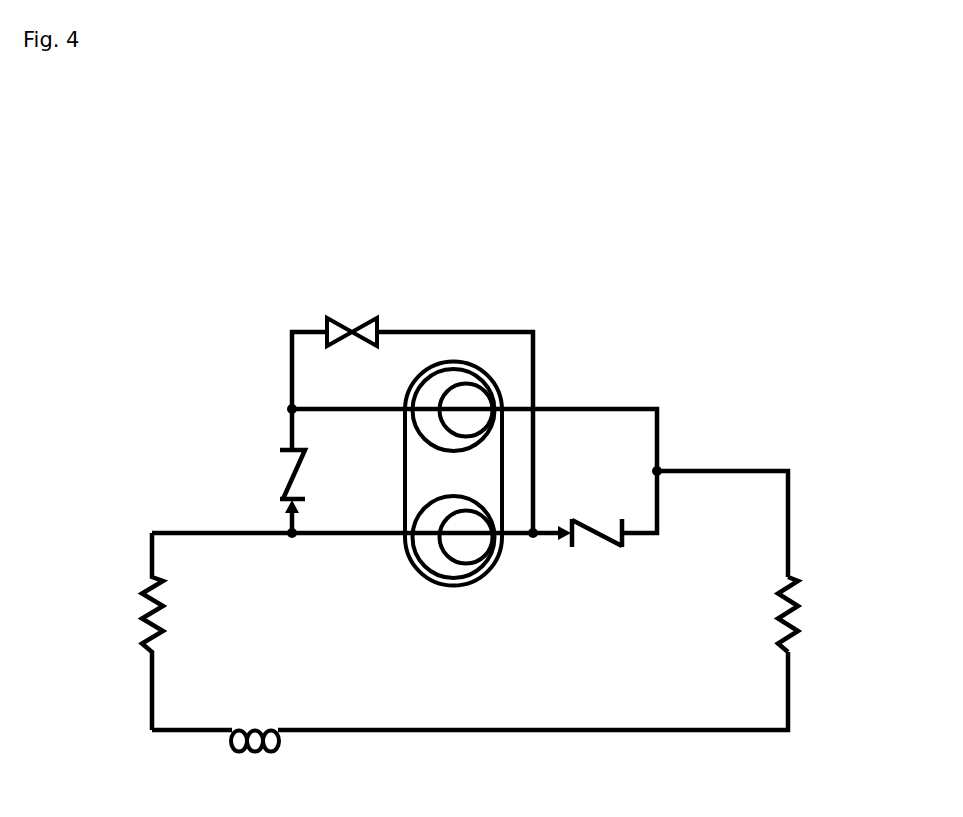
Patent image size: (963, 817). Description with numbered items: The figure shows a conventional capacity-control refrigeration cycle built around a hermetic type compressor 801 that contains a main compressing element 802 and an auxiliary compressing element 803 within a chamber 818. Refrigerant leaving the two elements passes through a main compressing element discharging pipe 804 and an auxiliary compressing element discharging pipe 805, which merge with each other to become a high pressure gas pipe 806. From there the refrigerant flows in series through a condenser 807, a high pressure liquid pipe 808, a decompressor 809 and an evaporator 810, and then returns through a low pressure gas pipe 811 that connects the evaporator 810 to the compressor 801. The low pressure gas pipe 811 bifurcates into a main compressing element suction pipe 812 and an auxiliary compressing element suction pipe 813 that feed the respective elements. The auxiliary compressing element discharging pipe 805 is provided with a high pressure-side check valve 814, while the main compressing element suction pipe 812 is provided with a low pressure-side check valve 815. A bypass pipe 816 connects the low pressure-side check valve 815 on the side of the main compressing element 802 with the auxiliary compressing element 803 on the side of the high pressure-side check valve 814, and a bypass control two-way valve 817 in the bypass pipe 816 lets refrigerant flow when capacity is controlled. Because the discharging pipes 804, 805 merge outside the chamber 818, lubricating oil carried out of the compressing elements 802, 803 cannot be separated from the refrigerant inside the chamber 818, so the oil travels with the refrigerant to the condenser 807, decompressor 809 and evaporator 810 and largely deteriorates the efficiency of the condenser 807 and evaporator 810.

The hermetic type compressor 801 is at (413, 383).
The main compressing element 802 is at (472, 369).
The auxiliary compressing element 803 is at (428, 579).
The main compressing element discharging pipe 804 is at (595, 408).
The auxiliary compressing element discharging pipe 805 is at (652, 536).
The high pressure gas pipe 806 is at (720, 469).
The condenser 807 is at (797, 578).
The high pressure liquid pipe 808 is at (592, 730).
The decompressor 809 is at (278, 743).
The evaporator 810 is at (145, 617).
The low pressure gas pipe 811 is at (213, 531).
The main compressing element suction pipe 812 is at (318, 406).
The auxiliary compressing element suction pipe 813 is at (320, 538).
The high pressure-side check valve 814 is at (593, 540).
The low pressure-side check valve 815 is at (285, 480).
The bypass pipe 816 is at (443, 331).
The bypass control two-way valve 817 is at (368, 324).
The chamber 818 is at (405, 490).